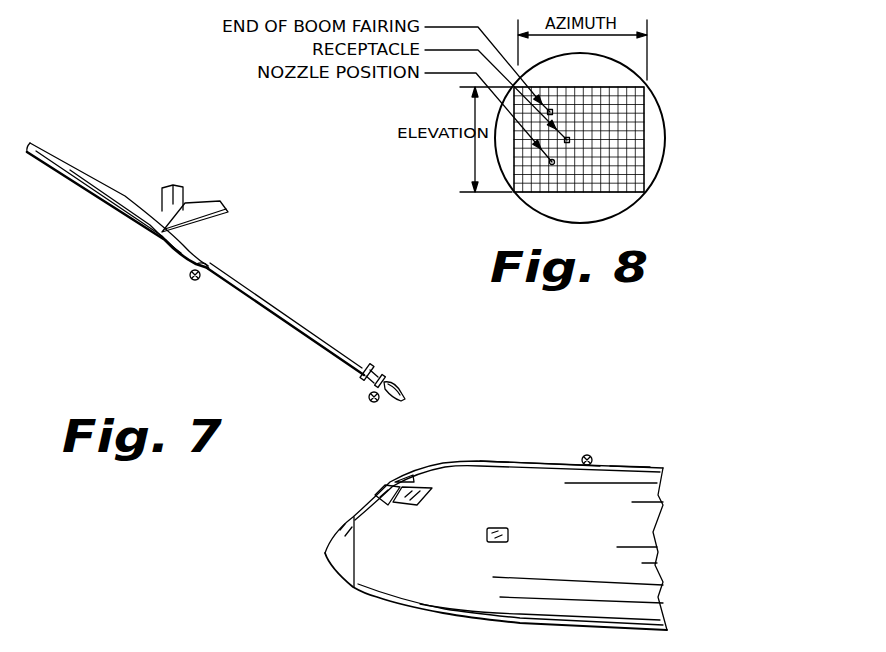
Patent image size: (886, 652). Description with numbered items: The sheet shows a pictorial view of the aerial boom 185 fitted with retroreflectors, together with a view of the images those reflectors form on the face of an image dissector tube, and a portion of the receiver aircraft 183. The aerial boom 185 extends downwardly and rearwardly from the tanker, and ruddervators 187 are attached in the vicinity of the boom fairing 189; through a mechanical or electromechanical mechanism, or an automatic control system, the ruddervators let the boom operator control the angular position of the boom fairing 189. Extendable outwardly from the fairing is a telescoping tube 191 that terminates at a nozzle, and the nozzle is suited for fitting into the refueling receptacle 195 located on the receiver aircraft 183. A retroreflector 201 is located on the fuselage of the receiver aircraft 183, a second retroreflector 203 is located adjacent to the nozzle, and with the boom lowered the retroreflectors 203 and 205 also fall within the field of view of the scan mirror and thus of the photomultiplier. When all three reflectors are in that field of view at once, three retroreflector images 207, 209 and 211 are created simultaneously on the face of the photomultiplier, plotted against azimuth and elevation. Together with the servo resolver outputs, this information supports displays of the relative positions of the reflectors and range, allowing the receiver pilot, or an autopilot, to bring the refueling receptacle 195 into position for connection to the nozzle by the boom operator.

In FIG. 7, the receiver aircraft 183 is at (335, 537).
In FIG. 7, the aerial boom 185 is at (92, 167).
In FIG. 7, the ruddervators 187 is at (198, 213).
In FIG. 7, the boom fairing 189 is at (117, 202).
In FIG. 7, the telescoping tube 191 is at (292, 330).
In FIG. 7, the refueling receptacle 195 is at (387, 384).
In FIG. 7, the retroreflector 201 is at (586, 455).
In FIG. 7, the second retroreflector 203 is at (195, 281).
In FIG. 7, the retroreflector 205 is at (375, 403).
In FIG. 8, the retroreflector image 207 is at (552, 110).
In FIG. 8, the retroreflector image 209 is at (569, 138).
In FIG. 8, the retroreflector image 211 is at (549, 162).